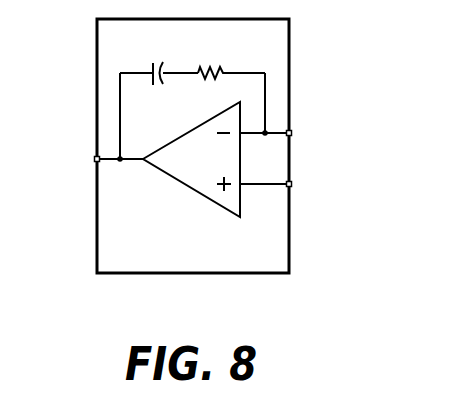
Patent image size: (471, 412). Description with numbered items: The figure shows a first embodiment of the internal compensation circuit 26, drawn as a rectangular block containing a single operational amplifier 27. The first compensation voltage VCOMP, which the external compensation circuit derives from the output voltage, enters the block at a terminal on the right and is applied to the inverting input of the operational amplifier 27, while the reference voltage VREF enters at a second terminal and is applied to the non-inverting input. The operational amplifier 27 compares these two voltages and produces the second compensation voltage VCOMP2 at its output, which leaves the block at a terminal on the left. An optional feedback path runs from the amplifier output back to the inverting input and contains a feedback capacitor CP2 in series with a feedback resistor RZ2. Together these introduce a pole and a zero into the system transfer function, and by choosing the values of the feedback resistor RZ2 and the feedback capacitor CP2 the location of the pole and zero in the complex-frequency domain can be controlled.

The internal compensation circuit 26 is at (128, 258).
The operational amplifier 27 is at (190, 193).
The feedback capacitor CP2 is at (156, 63).
The feedback resistor RZ2 is at (211, 62).
The first compensation voltage VCOMP is at (317, 133).
The reference voltage VREF is at (310, 184).
The second compensation voltage VCOMP2 is at (63, 159).